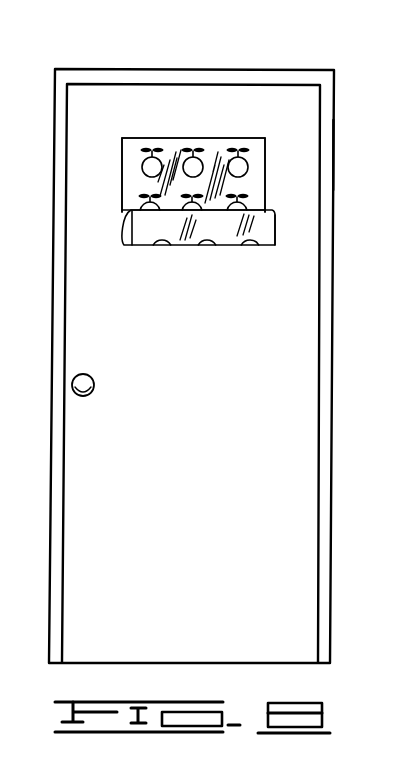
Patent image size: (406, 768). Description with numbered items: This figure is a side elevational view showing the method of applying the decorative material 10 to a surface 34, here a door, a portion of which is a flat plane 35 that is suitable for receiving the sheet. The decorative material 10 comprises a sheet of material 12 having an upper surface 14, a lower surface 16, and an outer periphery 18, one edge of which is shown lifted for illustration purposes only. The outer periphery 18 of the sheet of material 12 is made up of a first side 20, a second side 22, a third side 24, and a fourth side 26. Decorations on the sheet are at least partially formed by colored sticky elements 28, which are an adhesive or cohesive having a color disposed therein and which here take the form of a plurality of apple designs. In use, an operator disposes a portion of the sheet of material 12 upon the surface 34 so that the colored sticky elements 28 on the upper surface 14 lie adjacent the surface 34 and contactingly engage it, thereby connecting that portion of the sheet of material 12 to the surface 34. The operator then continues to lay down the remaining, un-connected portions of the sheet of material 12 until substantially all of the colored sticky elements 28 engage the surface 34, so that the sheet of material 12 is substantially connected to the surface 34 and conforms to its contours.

The decorative material 10 is at (296, 60).
The sheet of material 12 is at (112, 168).
The upper surface 14 is at (143, 225).
The lower surface 16 is at (257, 143).
The outer periphery 18 is at (267, 206).
The first side 20 is at (267, 181).
The second side 22 is at (122, 212).
The third side 24 is at (168, 137).
The fourth side 26 is at (264, 216).
The colored sticky elements 28 is at (143, 160).
The surface 34 is at (338, 152).
The flat plane 35 is at (302, 208).